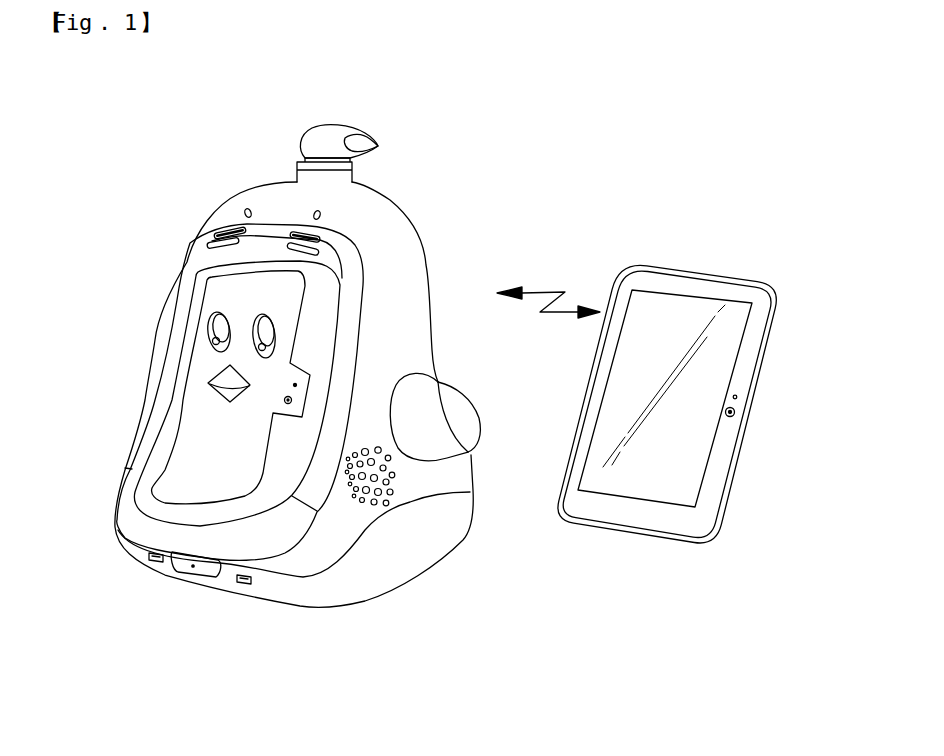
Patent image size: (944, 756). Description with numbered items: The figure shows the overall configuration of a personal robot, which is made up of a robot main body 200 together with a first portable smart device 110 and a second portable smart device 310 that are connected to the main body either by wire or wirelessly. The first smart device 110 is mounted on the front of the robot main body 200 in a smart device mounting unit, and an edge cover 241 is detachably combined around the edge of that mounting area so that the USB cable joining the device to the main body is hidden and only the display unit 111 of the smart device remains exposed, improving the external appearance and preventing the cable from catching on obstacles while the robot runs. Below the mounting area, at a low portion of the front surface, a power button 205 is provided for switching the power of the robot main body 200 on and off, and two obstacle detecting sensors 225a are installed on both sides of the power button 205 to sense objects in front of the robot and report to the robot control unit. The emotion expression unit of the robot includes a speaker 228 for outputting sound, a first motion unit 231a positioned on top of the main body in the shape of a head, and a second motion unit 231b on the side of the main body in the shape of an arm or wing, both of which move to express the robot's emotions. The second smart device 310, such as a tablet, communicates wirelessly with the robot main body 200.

The robot main body 200 is at (412, 178).
The first motion unit 231a is at (330, 128).
The second motion unit 231b is at (458, 408).
The edge cover 241 is at (327, 293).
The first portable smart device 110 is at (175, 358).
The display unit 111 is at (185, 404).
The speaker 228 is at (402, 486).
The power button 205 is at (187, 562).
The obstacle detecting sensor 225a is at (150, 558).
The second portable smart device 310 is at (565, 540).